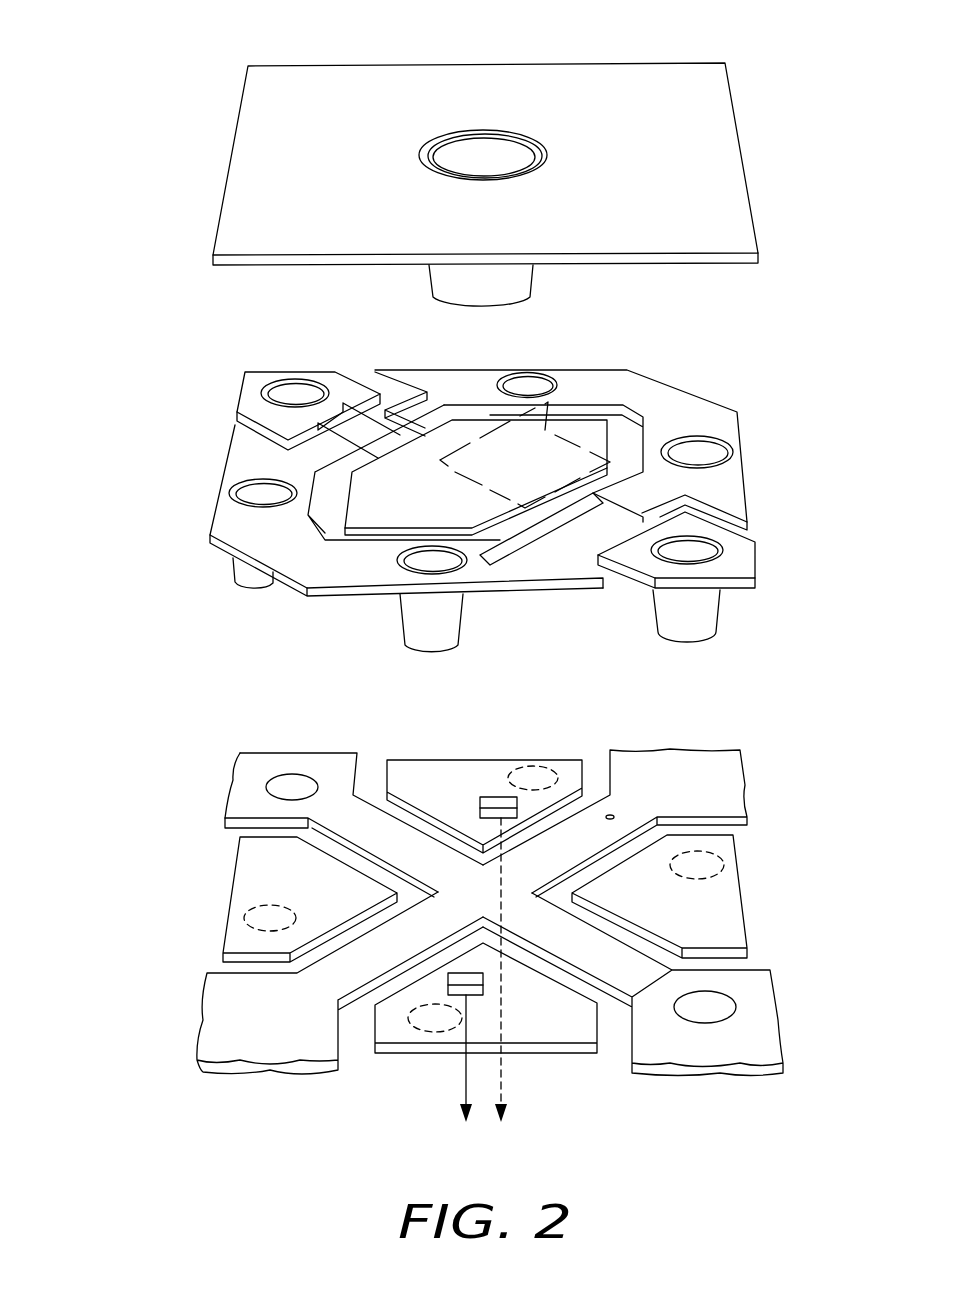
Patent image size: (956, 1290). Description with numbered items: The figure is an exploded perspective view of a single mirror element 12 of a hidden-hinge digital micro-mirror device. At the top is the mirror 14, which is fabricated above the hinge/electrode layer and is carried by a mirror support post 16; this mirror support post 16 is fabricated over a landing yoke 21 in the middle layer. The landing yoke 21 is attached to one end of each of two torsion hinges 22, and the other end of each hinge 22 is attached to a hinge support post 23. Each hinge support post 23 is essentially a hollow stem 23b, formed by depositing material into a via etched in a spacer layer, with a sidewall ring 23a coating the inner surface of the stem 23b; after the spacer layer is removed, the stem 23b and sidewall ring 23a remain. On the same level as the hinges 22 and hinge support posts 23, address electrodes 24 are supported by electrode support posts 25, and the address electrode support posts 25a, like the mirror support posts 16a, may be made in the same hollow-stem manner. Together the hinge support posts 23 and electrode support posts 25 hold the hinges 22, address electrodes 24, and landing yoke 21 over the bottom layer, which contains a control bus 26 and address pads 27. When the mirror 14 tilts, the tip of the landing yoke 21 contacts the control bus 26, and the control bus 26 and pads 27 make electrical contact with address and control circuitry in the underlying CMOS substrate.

The mirror element 12 is at (120, 150).
The mirror 14 is at (428, 72).
The mirror support post 16 is at (535, 267).
The mirror support post 16a is at (517, 144).
The landing yoke 21 is at (490, 432).
The torsion hinge 22 is at (350, 420).
The hinge support post 23 is at (248, 386).
The sidewall ring 23a is at (722, 547).
The hollow stem 23b is at (718, 612).
The address electrode 24 is at (224, 521).
The electrode support post 25 is at (402, 620).
The address electrode support post 25a is at (470, 557).
The control bus 26 is at (242, 762).
The address pad 27 is at (418, 768).